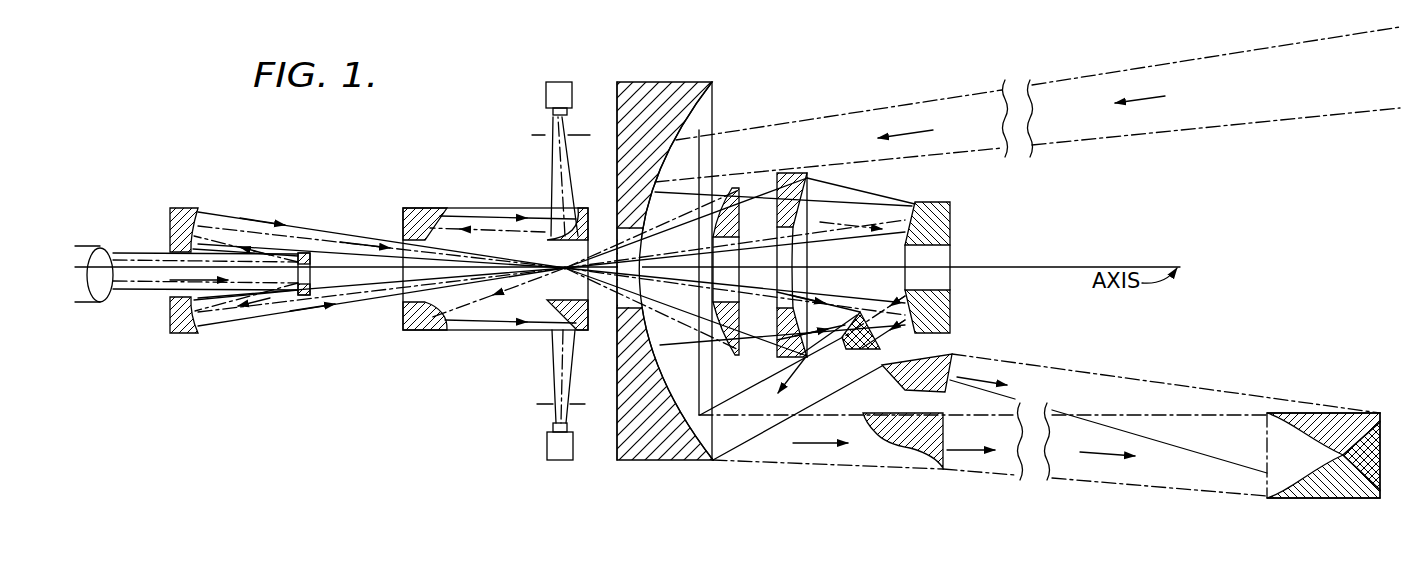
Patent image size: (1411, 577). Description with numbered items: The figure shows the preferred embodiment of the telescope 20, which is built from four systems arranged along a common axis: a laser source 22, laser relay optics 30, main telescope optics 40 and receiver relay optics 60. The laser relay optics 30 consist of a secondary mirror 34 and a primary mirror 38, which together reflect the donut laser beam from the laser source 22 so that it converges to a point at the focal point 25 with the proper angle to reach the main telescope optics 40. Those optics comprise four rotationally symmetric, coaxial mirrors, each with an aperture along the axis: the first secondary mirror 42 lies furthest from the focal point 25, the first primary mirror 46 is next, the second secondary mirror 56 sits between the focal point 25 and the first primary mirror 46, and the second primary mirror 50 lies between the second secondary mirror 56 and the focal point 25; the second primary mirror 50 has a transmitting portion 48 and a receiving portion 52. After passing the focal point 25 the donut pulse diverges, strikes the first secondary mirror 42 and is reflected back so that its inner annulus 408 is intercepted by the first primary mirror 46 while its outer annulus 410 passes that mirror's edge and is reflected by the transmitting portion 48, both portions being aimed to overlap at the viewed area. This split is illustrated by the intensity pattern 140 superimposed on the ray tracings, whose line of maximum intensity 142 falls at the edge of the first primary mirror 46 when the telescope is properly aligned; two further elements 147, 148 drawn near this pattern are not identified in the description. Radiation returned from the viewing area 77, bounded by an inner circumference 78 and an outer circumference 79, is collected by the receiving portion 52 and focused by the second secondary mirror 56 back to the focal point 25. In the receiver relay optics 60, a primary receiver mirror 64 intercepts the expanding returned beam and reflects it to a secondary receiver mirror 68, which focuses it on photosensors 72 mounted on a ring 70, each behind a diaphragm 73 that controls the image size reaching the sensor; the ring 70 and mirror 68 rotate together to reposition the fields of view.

The telescope 20 is at (447, 249).
The laser source 22 is at (186, 308).
The focal point 25 is at (574, 262).
The laser relay optics 30 is at (367, 284).
The secondary mirror 34 is at (304, 252).
The primary mirror 38 is at (198, 222).
The main telescope optics 40 is at (982, 270).
The first secondary mirror 42 is at (905, 293).
The first primary mirror 46 is at (807, 203).
The transmitting portion 48 is at (707, 103).
The second primary mirror 50 is at (680, 82).
The receiving portion 52 is at (686, 137).
The second secondary mirror 56 is at (730, 190).
The receiver relay optics 60 is at (486, 292).
The primary receiver mirror 64 is at (450, 329).
The secondary receiver mirror 68 is at (550, 332).
The ring 70 is at (544, 448).
The photosensors 72 is at (553, 117).
The diaphragm 73 is at (547, 137).
The viewing area 77 is at (1328, 463).
The inner circumference 78 is at (1381, 413).
The outer circumference 79 is at (1380, 500).
The intensity pattern 140 is at (858, 353).
The line of maximum intensity 142 is at (848, 346).
The wedge 147 is at (858, 306).
The mirror 148 is at (889, 357).
The inner annulus 408 is at (800, 355).
The outer annulus 410 is at (753, 407).